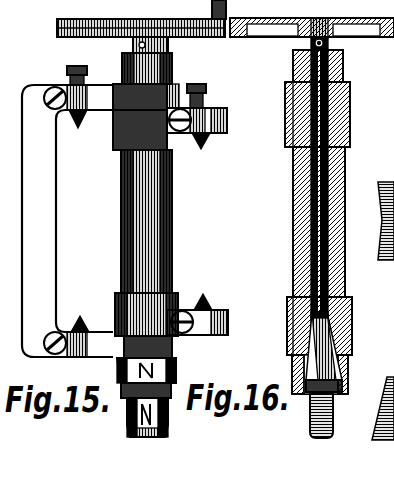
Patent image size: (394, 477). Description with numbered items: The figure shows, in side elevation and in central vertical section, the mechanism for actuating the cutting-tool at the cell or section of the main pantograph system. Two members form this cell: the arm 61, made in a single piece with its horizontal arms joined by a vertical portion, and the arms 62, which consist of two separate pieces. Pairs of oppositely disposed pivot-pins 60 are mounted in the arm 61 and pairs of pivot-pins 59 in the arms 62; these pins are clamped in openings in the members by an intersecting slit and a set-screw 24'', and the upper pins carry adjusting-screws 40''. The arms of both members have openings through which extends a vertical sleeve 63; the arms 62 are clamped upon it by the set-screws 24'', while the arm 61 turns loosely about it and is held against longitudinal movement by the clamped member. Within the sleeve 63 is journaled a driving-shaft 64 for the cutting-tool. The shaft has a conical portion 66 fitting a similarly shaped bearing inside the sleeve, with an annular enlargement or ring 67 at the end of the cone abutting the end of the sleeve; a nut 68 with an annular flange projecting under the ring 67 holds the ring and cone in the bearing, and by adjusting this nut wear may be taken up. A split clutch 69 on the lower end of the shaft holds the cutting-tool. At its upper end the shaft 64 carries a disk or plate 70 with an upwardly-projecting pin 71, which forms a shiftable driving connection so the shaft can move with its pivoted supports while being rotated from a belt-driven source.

In FIG. 15, the disk or plate 70 is at (58, 30).
In FIG. 16, the disk or plate 70 is at (312, 18).
In FIG. 15, the upwardly-projecting pin 71 is at (212, 6).
In FIG. 15, the arm 61 is at (40, 247).
In FIG. 16, the arm 61 is at (350, 95).
In FIG. 15, the set-screw 24'' is at (127, 208).
In FIG. 15, the adjusting-screw 40'' is at (153, 201).
In FIG. 15, the arm 62 is at (227, 118).
In FIG. 16, the arm 62 is at (287, 124).
In FIG. 15, the pivot-pin 60 is at (79, 124).
In FIG. 15, the pivot-pin 59 is at (204, 138).
In FIG. 15, the vertical sleeve 63 is at (172, 230).
In FIG. 16, the vertical sleeve 63 is at (297, 230).
In FIG. 16, the driving-shaft 64 is at (345, 166).
In FIG. 16, the conical portion 66 is at (312, 360).
In FIG. 16, the annular enlargement or ring 67 is at (347, 377).
In FIG. 15, the nut 68 is at (178, 362).
In FIG. 16, the nut 68 is at (348, 370).
In FIG. 16, the split clutch 69 is at (312, 417).